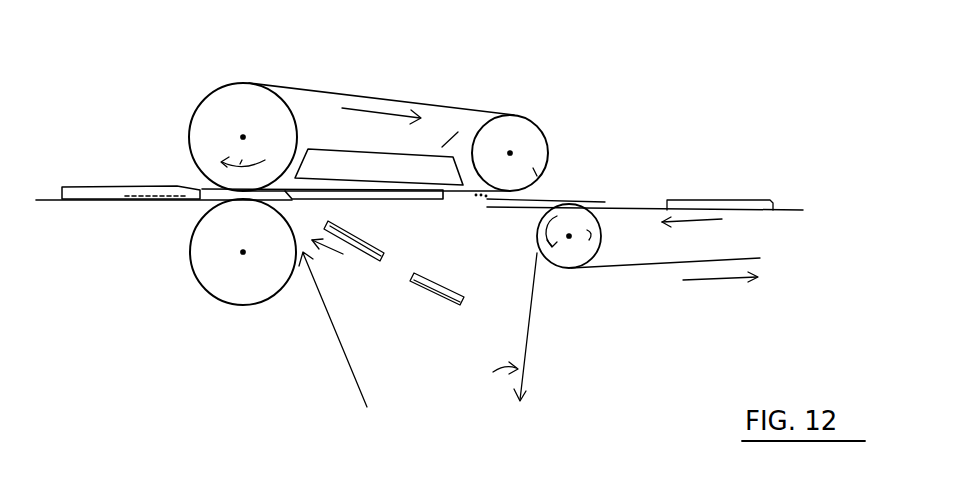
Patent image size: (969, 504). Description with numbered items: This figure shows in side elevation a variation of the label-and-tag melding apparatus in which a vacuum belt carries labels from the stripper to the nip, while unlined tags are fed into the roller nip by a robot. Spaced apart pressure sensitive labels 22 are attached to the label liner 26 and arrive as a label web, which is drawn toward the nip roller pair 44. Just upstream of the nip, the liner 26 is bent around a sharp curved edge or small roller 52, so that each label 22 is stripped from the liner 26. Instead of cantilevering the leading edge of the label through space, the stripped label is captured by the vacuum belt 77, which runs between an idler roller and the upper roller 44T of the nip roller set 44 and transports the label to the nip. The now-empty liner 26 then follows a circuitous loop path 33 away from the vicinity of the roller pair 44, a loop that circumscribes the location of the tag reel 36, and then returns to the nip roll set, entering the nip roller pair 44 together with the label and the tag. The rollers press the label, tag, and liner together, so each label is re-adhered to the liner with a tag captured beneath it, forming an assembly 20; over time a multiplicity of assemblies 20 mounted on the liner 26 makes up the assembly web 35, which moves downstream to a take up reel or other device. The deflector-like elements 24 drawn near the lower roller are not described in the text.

The nip roller pair 44 is at (335, 111).
The upper roller of the nip roller set 44T is at (207, 108).
The vacuum belt 77 is at (473, 186).
The assembly 20 is at (124, 183).
The assembly web 35 is at (92, 205).
The pressure sensitive label 22 is at (418, 203).
The tag reel 36 is at (766, 201).
The small roller 52 is at (585, 255).
The deflector segments 24 is at (370, 260).
The label liner 26 is at (357, 371).
The circuitous loop path 33 is at (495, 380).